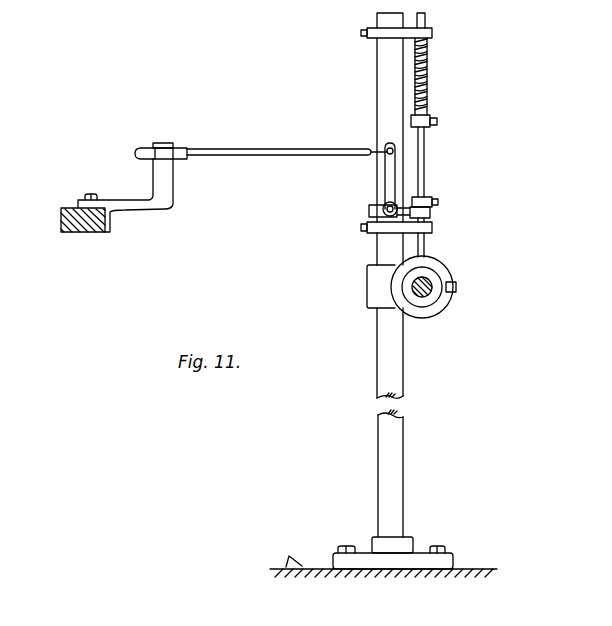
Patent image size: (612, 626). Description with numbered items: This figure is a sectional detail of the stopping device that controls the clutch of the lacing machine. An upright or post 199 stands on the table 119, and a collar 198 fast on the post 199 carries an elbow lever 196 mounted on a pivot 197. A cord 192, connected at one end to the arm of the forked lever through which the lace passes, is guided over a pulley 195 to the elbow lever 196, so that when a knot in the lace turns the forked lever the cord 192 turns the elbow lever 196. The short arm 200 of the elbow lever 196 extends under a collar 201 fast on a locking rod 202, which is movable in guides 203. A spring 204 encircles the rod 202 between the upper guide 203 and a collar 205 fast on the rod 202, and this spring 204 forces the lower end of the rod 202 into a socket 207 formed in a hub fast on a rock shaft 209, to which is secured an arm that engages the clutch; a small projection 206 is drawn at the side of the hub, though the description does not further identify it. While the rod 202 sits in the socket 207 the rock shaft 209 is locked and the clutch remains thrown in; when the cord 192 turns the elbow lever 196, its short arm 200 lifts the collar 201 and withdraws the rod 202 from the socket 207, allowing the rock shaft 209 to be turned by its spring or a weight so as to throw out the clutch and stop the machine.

The table 119 is at (88, 232).
The cord 192 is at (290, 147).
The pulley 195 is at (147, 148).
The elbow lever 196 is at (388, 172).
The pivot 197 is at (383, 206).
The collar 198 is at (370, 210).
The post 199 is at (377, 375).
The short arm 200 is at (432, 218).
The collar 201 is at (432, 196).
The rod 202 is at (425, 160).
The guides 203 is at (433, 32).
The spring 204 is at (427, 60).
The collar 205 is at (432, 118).
The stud 206 is at (456, 296).
The socket 207 is at (440, 260).
The rock shaft 209 is at (418, 292).